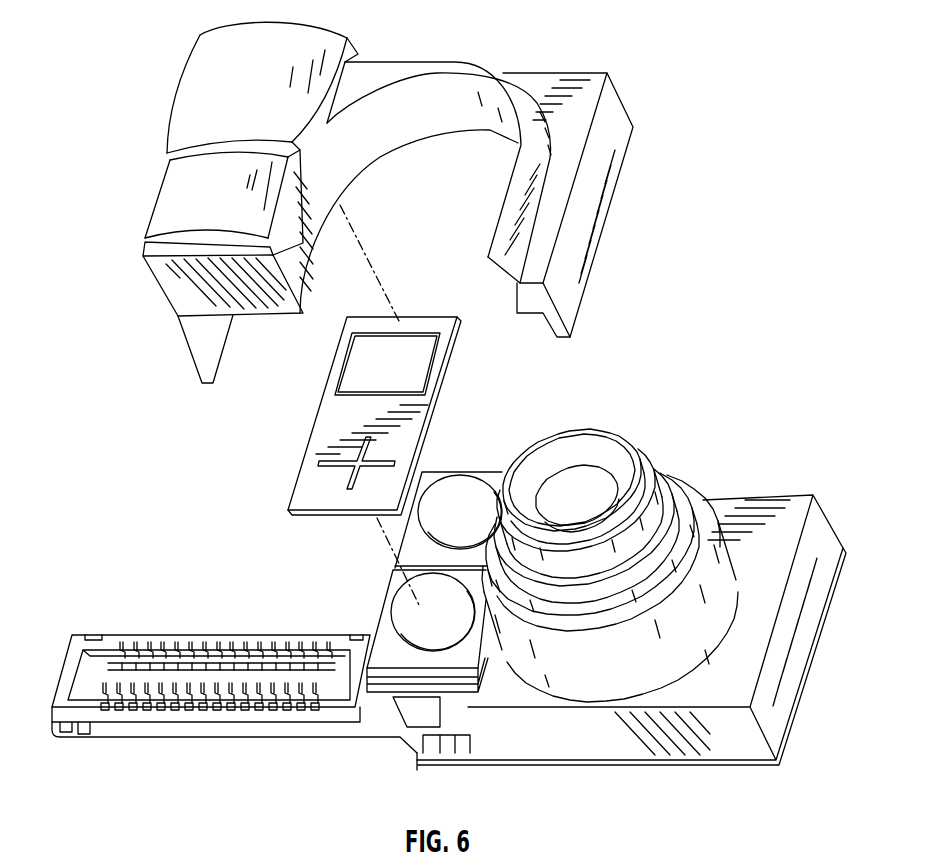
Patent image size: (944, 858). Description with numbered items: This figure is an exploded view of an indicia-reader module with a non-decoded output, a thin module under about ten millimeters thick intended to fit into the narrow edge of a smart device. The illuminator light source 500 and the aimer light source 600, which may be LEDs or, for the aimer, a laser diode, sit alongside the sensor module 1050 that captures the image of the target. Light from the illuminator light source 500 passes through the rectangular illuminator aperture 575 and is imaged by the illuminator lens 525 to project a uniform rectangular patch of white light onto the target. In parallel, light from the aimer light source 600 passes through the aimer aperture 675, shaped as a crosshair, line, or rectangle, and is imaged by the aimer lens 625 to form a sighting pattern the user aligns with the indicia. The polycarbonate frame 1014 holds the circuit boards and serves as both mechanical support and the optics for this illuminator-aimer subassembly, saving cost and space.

The illuminator lens 525 is at (217, 82).
The aimer lens 625 is at (173, 205).
The polycarbonate frame 1014 is at (572, 97).
The illuminator aperture 575 is at (337, 350).
The aimer aperture 675 is at (296, 472).
The illuminator light source 500 is at (462, 478).
The aimer light source 600 is at (403, 618).
The sensor module 1050 is at (743, 495).